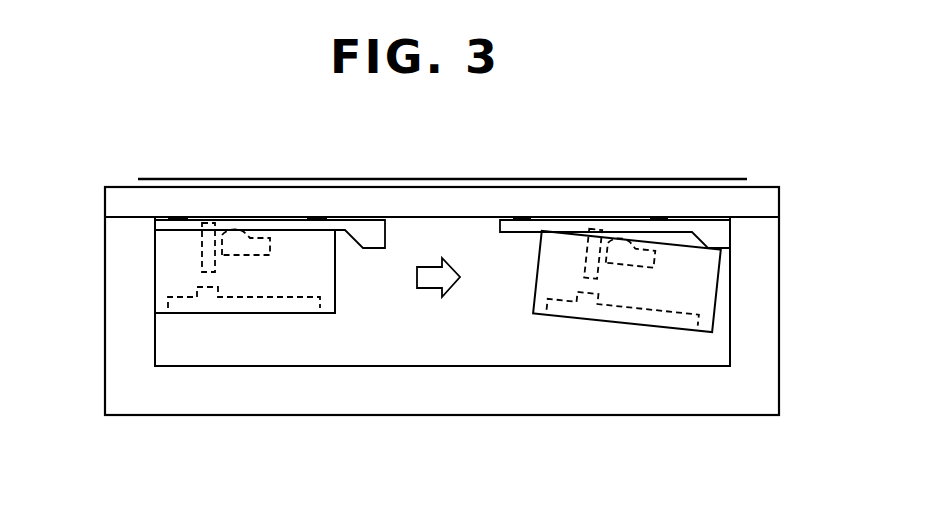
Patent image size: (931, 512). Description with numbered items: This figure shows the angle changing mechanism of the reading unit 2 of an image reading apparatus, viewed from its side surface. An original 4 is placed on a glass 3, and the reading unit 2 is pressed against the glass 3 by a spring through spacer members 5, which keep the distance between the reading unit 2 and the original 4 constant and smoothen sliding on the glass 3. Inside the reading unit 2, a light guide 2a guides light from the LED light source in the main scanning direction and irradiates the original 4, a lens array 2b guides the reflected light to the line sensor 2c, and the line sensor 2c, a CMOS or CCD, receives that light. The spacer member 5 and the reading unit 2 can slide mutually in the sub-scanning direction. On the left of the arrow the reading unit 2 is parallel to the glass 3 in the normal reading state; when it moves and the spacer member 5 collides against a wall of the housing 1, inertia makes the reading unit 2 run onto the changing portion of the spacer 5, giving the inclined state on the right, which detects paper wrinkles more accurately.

The housing 1 is at (340, 404).
The reading unit 2 is at (391, 290).
The light guide 2a is at (282, 242).
The lens array 2b is at (197, 240).
The line sensor 2c is at (213, 292).
The glass 3 is at (465, 203).
The original 4 is at (225, 178).
The spacer member 5 is at (370, 236).